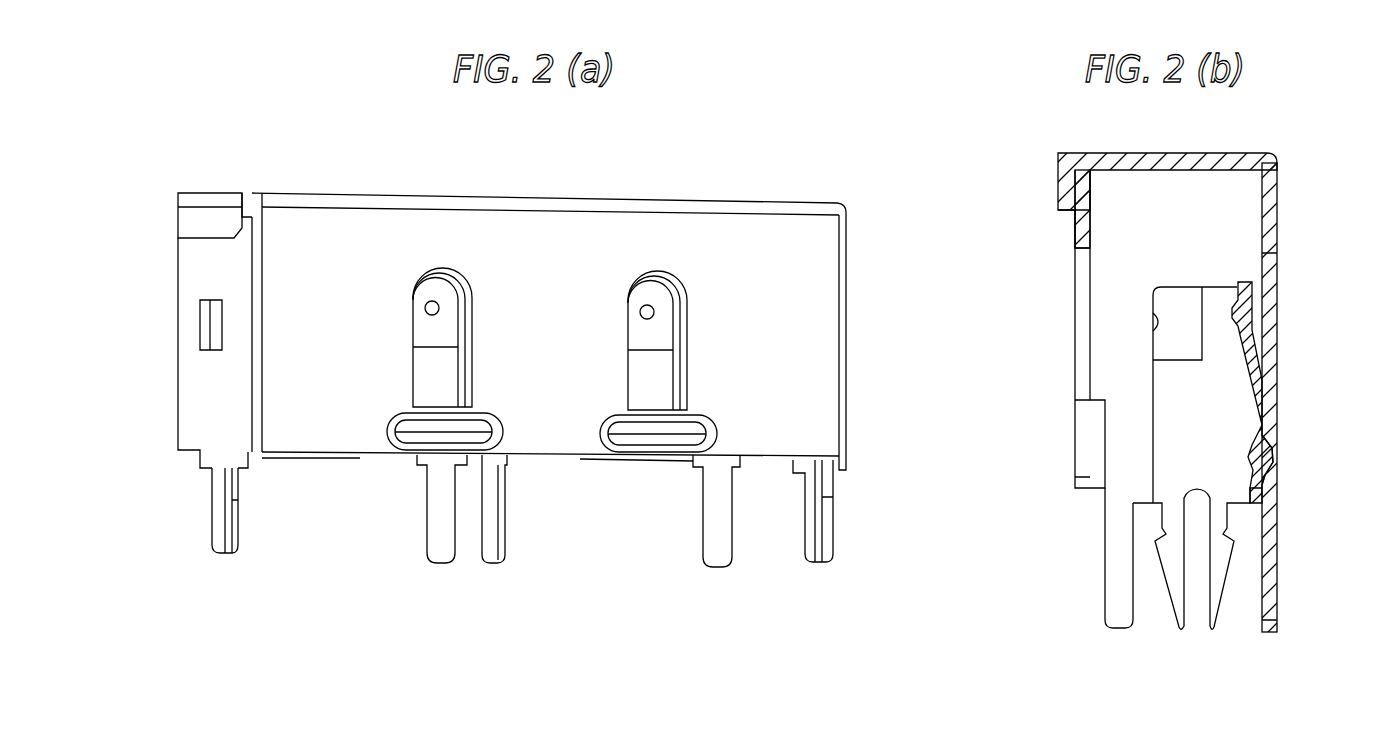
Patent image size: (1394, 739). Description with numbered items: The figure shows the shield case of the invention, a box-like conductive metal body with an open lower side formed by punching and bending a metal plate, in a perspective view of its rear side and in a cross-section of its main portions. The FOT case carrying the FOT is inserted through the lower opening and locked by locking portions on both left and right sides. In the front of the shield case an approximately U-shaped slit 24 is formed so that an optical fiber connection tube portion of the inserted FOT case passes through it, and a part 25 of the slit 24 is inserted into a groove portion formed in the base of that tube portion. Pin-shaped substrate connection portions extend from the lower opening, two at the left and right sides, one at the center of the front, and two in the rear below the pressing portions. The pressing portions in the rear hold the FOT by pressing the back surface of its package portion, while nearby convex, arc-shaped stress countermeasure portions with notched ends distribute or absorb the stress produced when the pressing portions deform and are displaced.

The slit 24 is at (1073, 273).
The part of slit 25 is at (1083, 218).